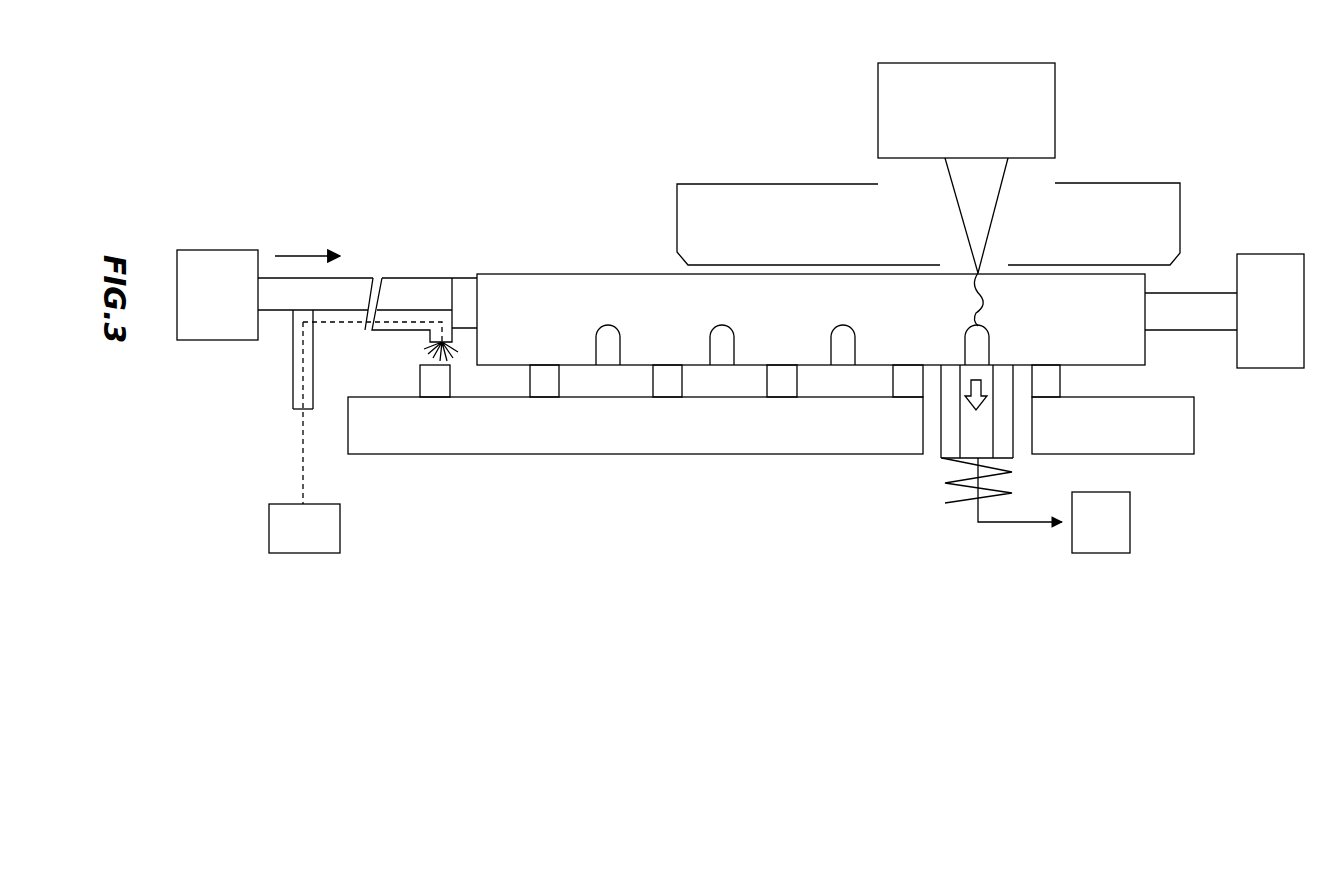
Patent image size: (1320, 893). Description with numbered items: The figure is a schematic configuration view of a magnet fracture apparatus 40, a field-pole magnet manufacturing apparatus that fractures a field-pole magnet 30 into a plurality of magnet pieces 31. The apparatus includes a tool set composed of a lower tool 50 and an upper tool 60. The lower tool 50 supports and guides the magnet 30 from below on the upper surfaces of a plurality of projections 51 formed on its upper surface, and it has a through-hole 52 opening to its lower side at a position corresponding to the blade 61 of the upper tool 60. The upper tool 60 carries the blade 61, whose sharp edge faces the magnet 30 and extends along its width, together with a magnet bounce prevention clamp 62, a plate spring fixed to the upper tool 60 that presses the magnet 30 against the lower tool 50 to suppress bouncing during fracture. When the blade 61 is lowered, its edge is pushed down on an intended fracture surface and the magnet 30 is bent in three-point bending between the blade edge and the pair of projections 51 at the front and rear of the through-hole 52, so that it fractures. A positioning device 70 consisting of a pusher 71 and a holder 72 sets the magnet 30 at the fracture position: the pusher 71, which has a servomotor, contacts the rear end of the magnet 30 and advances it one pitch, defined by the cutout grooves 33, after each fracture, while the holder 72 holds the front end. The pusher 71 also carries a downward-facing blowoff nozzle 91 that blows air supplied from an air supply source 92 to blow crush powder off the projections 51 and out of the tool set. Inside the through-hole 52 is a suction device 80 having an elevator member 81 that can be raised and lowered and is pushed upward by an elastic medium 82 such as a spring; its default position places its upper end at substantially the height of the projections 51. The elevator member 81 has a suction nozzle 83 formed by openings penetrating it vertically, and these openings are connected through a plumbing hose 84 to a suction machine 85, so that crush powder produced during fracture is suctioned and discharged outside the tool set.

The field-pole magnet 30 is at (533, 295).
The magnet piece 31 is at (1105, 287).
The cutout groove 33 is at (608, 335).
The magnet fracture apparatus 40 is at (601, 145).
The lower tool 50 is at (1208, 416).
The projection 51 is at (545, 390).
The through-hole 52 is at (933, 428).
The upper tool 60 is at (1064, 75).
The blade 61 is at (980, 211).
The magnet bounce prevention clamp 62 is at (737, 184).
The positioning device 70 is at (742, 291).
The pusher 71 is at (392, 268).
The holder 72 is at (1241, 247).
The suction device 80 is at (927, 508).
The elevator member 81 is at (945, 447).
The elastic medium 82 is at (958, 503).
The suction nozzle 83 is at (975, 422).
The plumbing hose 84 is at (1015, 522).
The suction machine 85 is at (1101, 522).
The blowoff nozzle 91 is at (430, 337).
The air supply source 92 is at (304, 528).